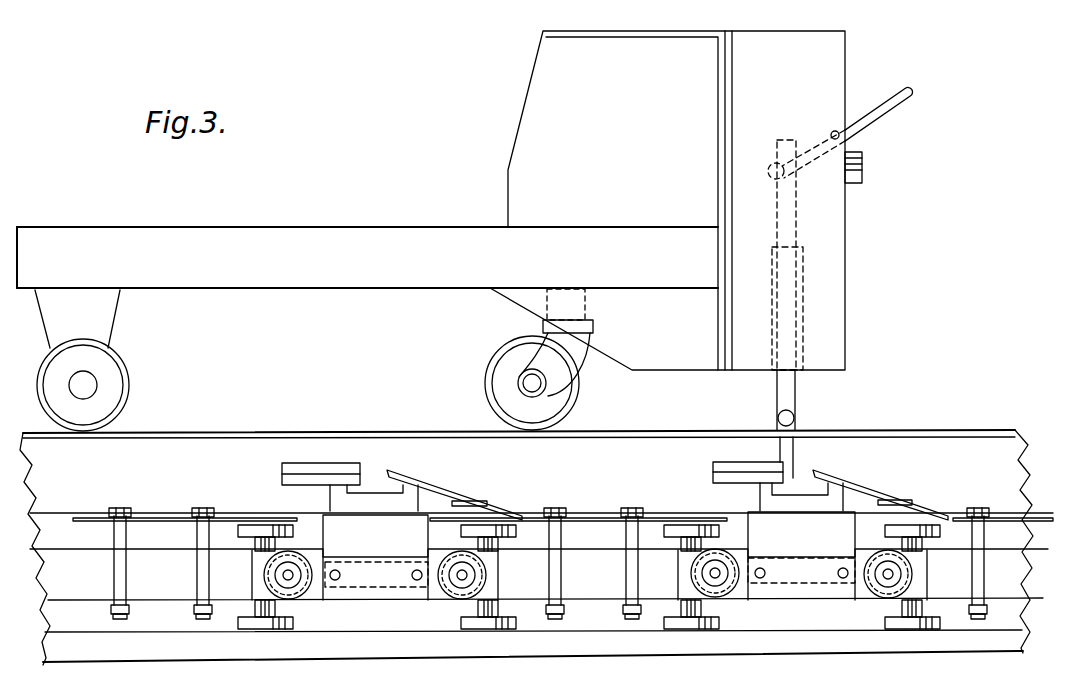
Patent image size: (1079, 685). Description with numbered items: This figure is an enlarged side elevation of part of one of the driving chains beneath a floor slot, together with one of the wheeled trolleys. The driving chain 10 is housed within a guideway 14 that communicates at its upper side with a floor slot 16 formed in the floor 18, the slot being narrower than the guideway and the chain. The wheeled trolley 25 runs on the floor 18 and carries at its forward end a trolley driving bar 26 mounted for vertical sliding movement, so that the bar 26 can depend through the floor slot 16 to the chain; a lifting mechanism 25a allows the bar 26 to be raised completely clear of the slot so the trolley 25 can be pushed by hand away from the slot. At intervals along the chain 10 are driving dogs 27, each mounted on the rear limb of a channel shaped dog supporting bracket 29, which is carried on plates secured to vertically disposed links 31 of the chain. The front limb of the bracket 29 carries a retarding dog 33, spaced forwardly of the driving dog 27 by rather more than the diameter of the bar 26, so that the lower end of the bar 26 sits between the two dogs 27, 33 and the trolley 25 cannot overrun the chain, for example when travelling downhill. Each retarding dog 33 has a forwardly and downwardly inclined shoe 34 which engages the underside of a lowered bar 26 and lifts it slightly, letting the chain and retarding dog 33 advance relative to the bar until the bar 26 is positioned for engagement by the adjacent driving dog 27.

The driving chain 10 is at (597, 548).
The guideway 14 is at (55, 525).
The floor slot 16 is at (957, 430).
The floor 18 is at (195, 432).
The wheeled trolley 25 is at (355, 232).
The lifting mechanism 25a is at (873, 115).
The trolley driving bar 26 is at (790, 448).
The driving dog 27 is at (325, 462).
The channel shaped dog supporting bracket 29 is at (381, 500).
The vertically disposed link 31 is at (372, 587).
The retarding dog 33 is at (389, 473).
The shoe 34 is at (466, 491).